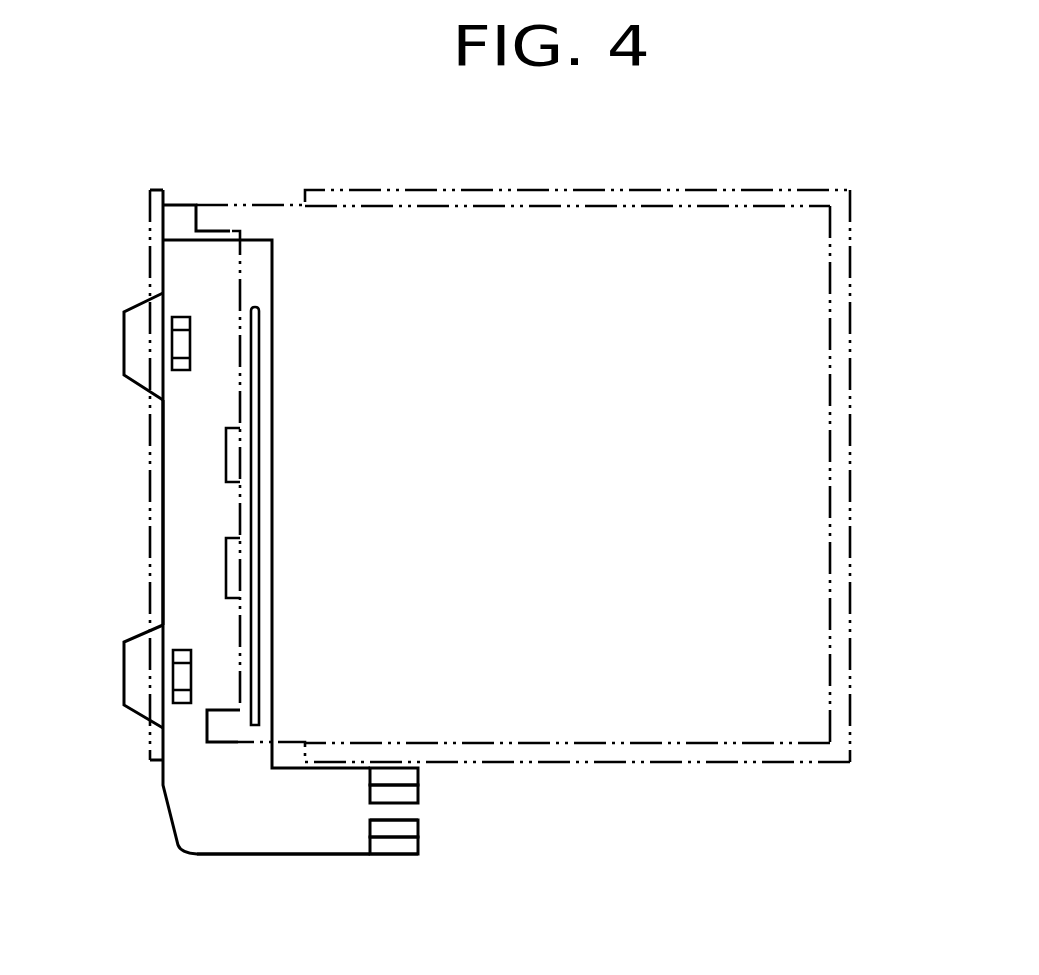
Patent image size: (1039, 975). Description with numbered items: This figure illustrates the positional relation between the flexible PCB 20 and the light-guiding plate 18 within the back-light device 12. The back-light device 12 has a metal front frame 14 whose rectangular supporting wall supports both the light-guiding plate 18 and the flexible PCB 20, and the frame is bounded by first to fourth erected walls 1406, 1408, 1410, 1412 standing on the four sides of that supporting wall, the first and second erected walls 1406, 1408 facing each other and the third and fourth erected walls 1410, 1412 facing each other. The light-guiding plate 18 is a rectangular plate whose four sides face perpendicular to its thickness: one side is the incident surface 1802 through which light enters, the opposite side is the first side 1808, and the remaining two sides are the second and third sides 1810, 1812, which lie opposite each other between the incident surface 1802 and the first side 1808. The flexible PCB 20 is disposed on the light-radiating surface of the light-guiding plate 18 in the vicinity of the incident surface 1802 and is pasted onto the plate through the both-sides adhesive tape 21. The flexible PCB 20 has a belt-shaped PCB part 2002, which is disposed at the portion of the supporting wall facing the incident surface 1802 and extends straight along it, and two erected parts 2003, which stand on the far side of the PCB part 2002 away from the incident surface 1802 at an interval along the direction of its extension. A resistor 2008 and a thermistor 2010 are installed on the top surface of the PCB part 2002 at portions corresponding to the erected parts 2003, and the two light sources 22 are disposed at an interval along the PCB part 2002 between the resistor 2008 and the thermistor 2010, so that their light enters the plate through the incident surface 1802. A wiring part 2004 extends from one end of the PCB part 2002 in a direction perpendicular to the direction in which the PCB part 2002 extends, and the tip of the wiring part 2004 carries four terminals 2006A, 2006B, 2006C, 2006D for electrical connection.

The back-light device 12 is at (933, 198).
The front frame 14 is at (842, 192).
The light-guiding plate 18 is at (728, 230).
The flexible PCB 20 is at (177, 838).
The both-sides adhesive tape 21 is at (260, 346).
The light sources 22 is at (233, 456).
The first erected wall 1406 is at (149, 247).
The second erected wall 1408 is at (850, 290).
The third erected wall 1410 is at (573, 190).
The fourth erected wall 1412 is at (783, 763).
The incident surface 1802 is at (240, 398).
The first side 1808 is at (830, 508).
The second side 1810 is at (457, 206).
The third side 1812 is at (665, 745).
The PCB part 2002 is at (168, 542).
The erected parts 2003 is at (138, 303).
The wiring part 2004 is at (317, 855).
The terminal 2006A is at (418, 775).
The terminal 2006B is at (418, 796).
The terminal 2006C is at (418, 828).
The terminal 2006D is at (418, 847).
The resistor 2008 is at (178, 343).
The thermistor 2010 is at (180, 680).